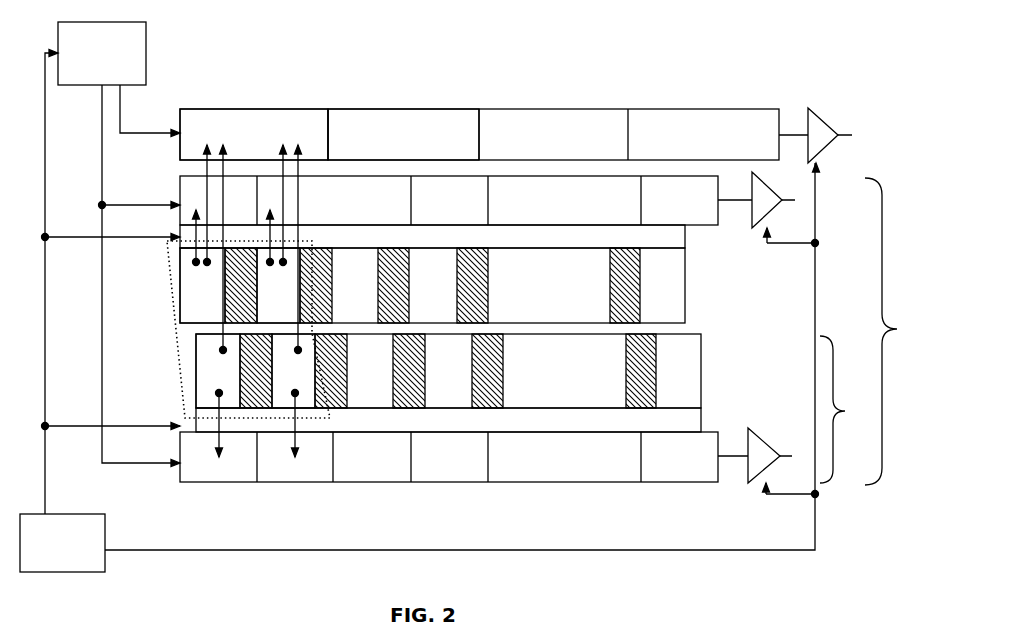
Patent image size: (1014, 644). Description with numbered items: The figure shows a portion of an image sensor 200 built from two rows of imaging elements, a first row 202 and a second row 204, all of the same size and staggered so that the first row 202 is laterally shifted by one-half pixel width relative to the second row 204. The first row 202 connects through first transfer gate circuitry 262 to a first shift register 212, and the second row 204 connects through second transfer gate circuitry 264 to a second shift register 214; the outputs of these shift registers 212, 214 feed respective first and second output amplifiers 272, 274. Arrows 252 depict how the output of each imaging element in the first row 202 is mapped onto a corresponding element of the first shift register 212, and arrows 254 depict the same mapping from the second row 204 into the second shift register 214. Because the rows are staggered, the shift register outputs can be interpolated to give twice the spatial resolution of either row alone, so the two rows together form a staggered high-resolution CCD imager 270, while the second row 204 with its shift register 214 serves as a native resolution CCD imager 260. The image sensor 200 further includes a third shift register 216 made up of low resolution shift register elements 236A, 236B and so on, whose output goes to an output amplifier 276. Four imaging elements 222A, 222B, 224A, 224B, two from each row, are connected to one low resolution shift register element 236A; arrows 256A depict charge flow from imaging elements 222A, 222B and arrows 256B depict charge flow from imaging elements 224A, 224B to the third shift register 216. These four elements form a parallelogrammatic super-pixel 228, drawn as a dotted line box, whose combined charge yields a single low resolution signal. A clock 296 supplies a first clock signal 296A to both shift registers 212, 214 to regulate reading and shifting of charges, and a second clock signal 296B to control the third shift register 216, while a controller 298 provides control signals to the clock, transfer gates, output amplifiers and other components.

The image sensor 200 is at (475, 295).
The first row of imaging elements 202 is at (464, 285).
The second row of imaging elements 204 is at (468, 363).
The first shift register 212 is at (460, 176).
The second shift register 214 is at (380, 482).
The third shift register 216 is at (479, 104).
The imaging element 222A is at (202, 285).
The imaging element 222B is at (278, 285).
The imaging element 224A is at (218, 371).
The imaging element 224B is at (293, 371).
The super-pixel 228 is at (178, 352).
The low resolution shift register element 236A is at (254, 134).
The low resolution shift register element 236B is at (403, 134).
The arrows 252 is at (268, 262).
The arrows 254 is at (296, 423).
The arrows 256A is at (283, 203).
The arrows 256B is at (302, 163).
The native resolution CCD imager 260 is at (847, 409).
The first transfer gate circuitry 262 is at (686, 234).
The second transfer gate circuitry 264 is at (702, 421).
The staggered high-resolution CCD imager 270 is at (898, 331).
The first output amplifier 272 is at (752, 222).
The second output amplifier 274 is at (748, 470).
The output amplifier 276 is at (823, 118).
The clock 296 is at (102, 53).
The first clock signal 296A is at (100, 192).
The second clock signal 296B is at (129, 134).
The controller 298 is at (420, 311).